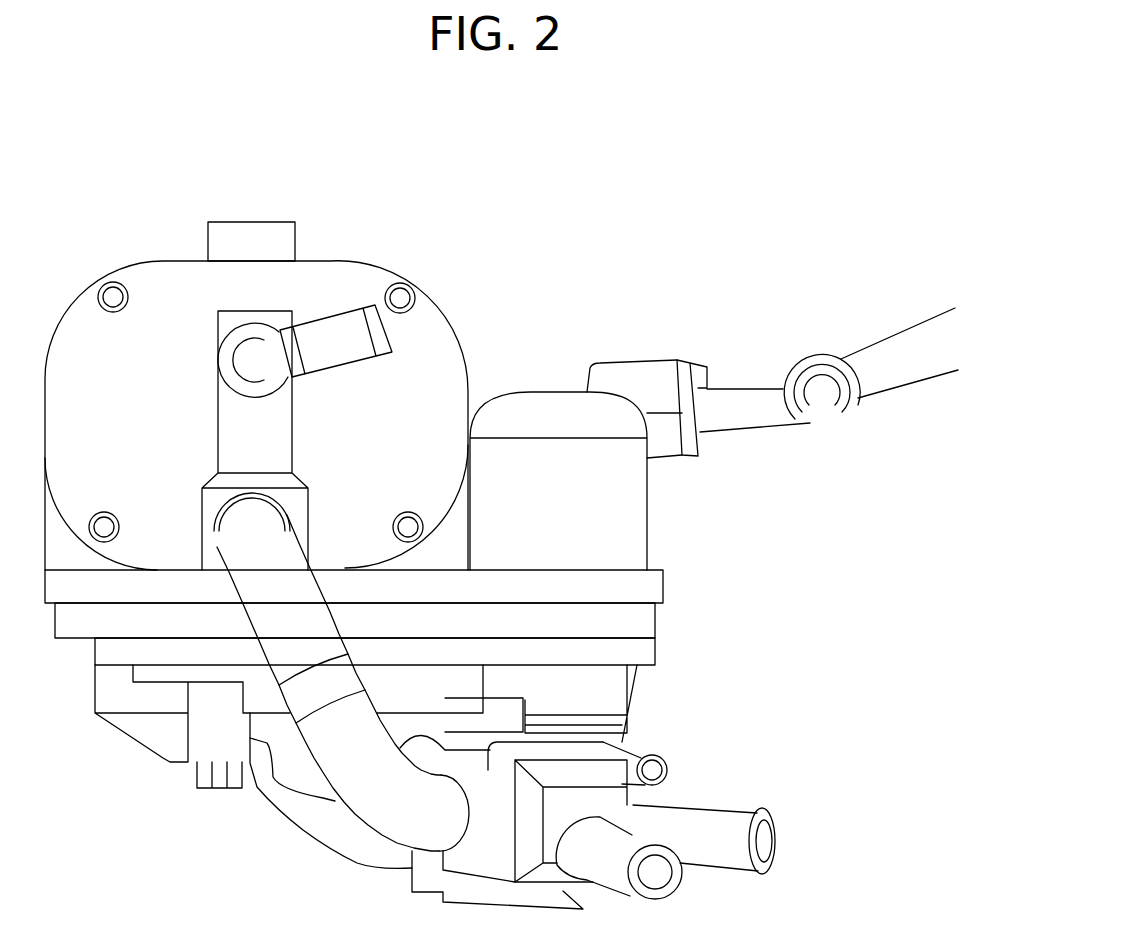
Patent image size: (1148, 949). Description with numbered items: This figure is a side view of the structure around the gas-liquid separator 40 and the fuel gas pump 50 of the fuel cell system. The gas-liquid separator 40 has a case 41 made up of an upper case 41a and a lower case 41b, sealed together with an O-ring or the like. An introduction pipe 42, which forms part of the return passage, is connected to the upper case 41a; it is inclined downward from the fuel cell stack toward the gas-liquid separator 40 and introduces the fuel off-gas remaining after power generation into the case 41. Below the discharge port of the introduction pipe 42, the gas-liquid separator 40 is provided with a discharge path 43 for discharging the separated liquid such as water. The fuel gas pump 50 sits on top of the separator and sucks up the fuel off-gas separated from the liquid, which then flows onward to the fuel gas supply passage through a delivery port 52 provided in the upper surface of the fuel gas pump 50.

The gas-liquid separator 40 is at (643, 268).
The case 41 is at (448, 634).
The upper case 41a is at (633, 530).
The lower case 41b is at (417, 787).
The introduction pipe 42 is at (742, 398).
The discharge path 43 is at (697, 813).
The fuel gas pump 50 is at (256, 359).
The delivery port 52 is at (257, 186).